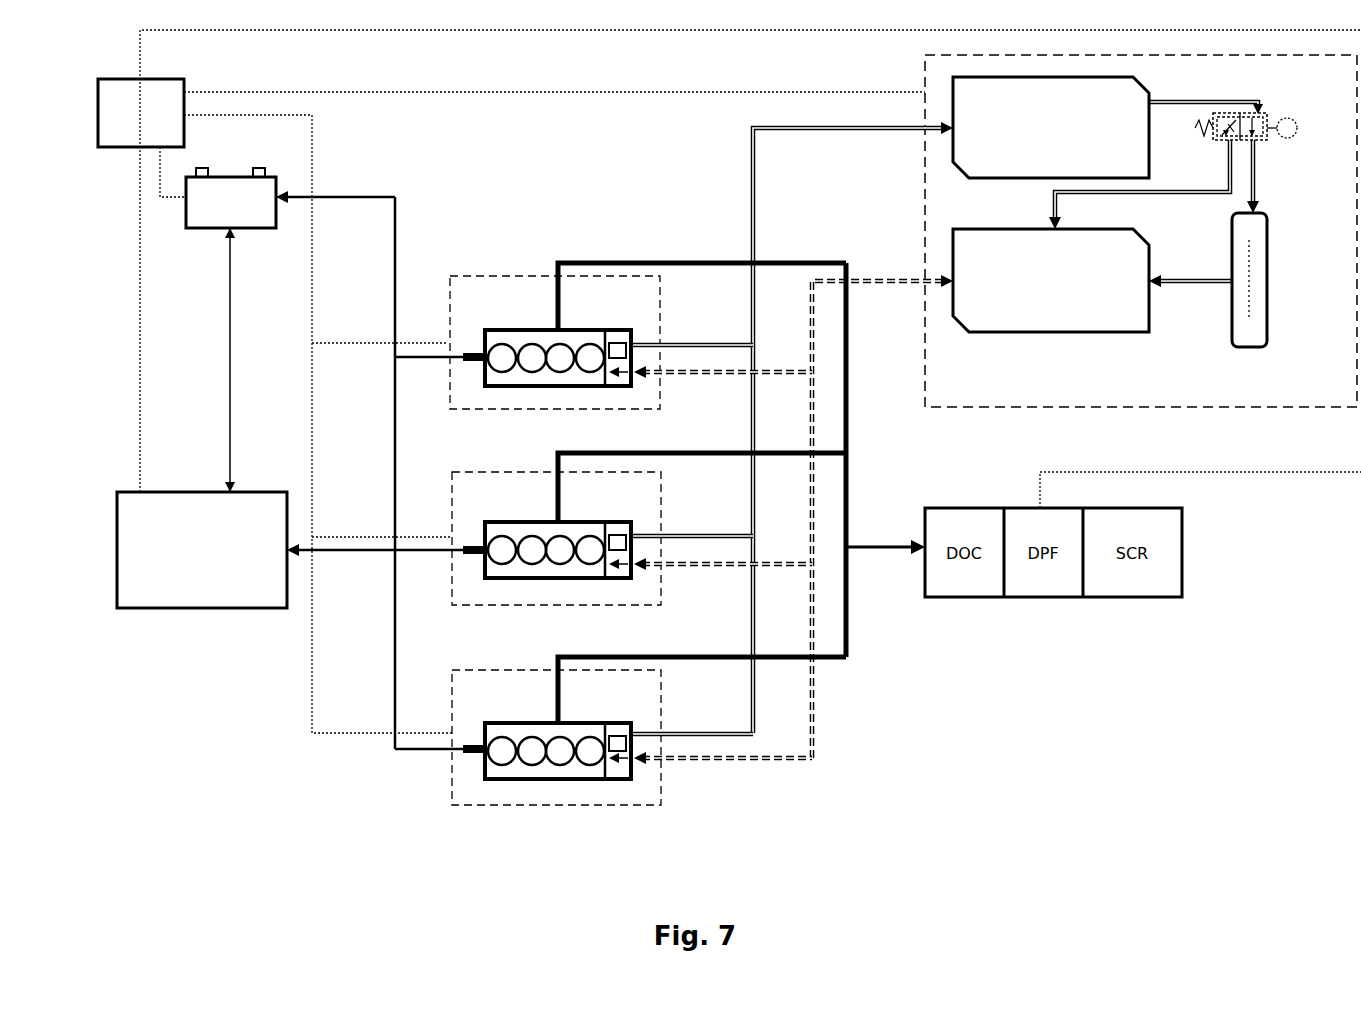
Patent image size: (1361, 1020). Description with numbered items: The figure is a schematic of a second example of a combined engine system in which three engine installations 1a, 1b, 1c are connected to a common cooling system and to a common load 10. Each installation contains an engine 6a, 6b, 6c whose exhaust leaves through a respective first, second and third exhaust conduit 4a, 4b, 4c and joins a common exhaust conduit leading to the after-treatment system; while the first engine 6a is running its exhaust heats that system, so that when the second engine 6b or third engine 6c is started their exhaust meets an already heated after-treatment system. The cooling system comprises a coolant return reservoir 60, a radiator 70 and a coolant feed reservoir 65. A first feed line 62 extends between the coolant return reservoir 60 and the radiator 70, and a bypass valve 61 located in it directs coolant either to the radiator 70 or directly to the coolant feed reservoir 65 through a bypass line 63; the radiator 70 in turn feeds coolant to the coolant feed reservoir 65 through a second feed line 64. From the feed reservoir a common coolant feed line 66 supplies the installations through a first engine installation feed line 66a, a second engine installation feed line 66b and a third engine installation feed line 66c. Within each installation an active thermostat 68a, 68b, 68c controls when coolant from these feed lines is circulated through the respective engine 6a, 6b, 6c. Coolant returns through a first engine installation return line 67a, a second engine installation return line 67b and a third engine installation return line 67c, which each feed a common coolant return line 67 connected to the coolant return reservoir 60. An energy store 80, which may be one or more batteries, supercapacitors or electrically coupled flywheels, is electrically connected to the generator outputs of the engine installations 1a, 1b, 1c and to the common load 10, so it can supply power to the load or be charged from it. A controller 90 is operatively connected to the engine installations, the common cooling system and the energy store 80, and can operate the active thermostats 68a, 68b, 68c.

The first engine installation 1a is at (492, 267).
The second engine installation 1b is at (493, 465).
The third engine installation 1c is at (497, 665).
The first exhaust conduit 4a is at (660, 262).
The second exhaust conduit 4b is at (590, 453).
The third exhaust conduit 4c is at (595, 655).
The first engine 6a is at (545, 330).
The second engine 6b is at (548, 522).
The third engine 6c is at (545, 722).
The common load 10 is at (202, 550).
The coolant return reservoir 60 is at (1051, 127).
The bypass valve 61 is at (1282, 96).
The first feed line 62 is at (1256, 176).
The bypass line 63 is at (1150, 194).
The second feed line 64 is at (1197, 290).
The coolant feed reservoir 65 is at (1051, 280).
The common coolant feed line 66 is at (814, 697).
The first engine installation feed line 66a is at (681, 374).
The second engine installation feed line 66b is at (684, 567).
The third engine installation feed line 66c is at (684, 762).
The common coolant return line 67 is at (811, 133).
The first engine installation return line 67a is at (684, 345).
The second engine installation return line 67b is at (684, 536).
The third engine installation return line 67c is at (684, 734).
The active thermostat 68a is at (621, 330).
The active thermostat 68b is at (621, 522).
The active thermostat 68c is at (621, 722).
The radiator 70 is at (1268, 263).
The energy store 80 is at (231, 198).
The controller 90 is at (141, 113).